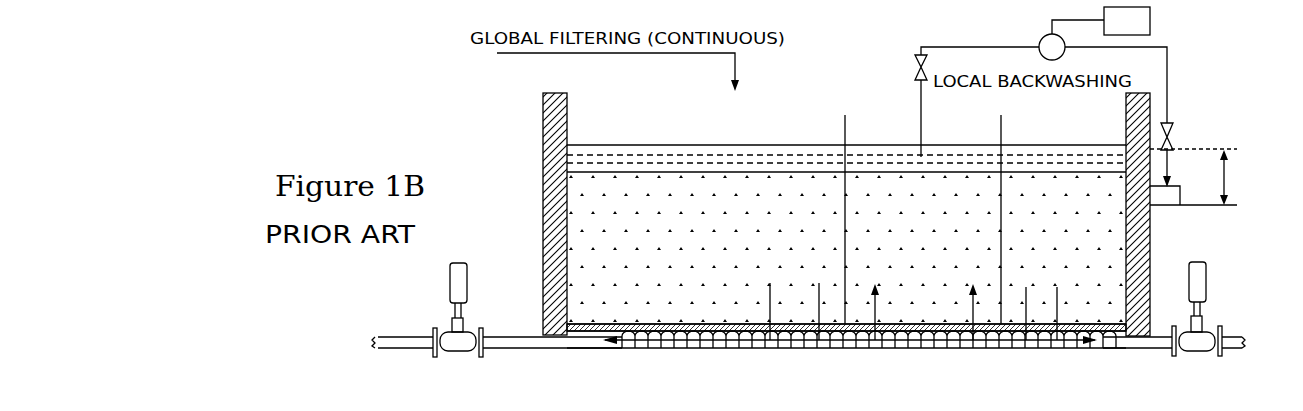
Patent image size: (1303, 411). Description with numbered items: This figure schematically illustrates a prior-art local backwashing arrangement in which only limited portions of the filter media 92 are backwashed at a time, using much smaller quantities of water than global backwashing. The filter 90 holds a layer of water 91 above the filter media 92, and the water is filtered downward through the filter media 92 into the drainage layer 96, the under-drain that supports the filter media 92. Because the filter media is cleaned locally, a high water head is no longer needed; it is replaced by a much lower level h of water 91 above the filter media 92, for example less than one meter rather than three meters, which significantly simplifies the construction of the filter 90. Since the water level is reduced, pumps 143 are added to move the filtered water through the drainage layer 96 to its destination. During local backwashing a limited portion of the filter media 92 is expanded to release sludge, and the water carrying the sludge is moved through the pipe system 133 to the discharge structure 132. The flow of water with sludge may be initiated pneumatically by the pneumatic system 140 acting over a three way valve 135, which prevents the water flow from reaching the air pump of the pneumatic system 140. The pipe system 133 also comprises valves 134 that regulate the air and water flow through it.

The filter 90 is at (543, 143).
The water 91 is at (580, 184).
The filter media 92 is at (582, 288).
The drainage layer 96 is at (1099, 333).
The discharge structure 132 is at (1182, 196).
The pipe system 133 is at (922, 27).
The valves 134 is at (914, 64).
The three way valve 135 is at (1040, 40).
The pneumatic system 140 is at (1152, 18).
The pumps 143 is at (445, 332).
The water level h is at (1230, 172).